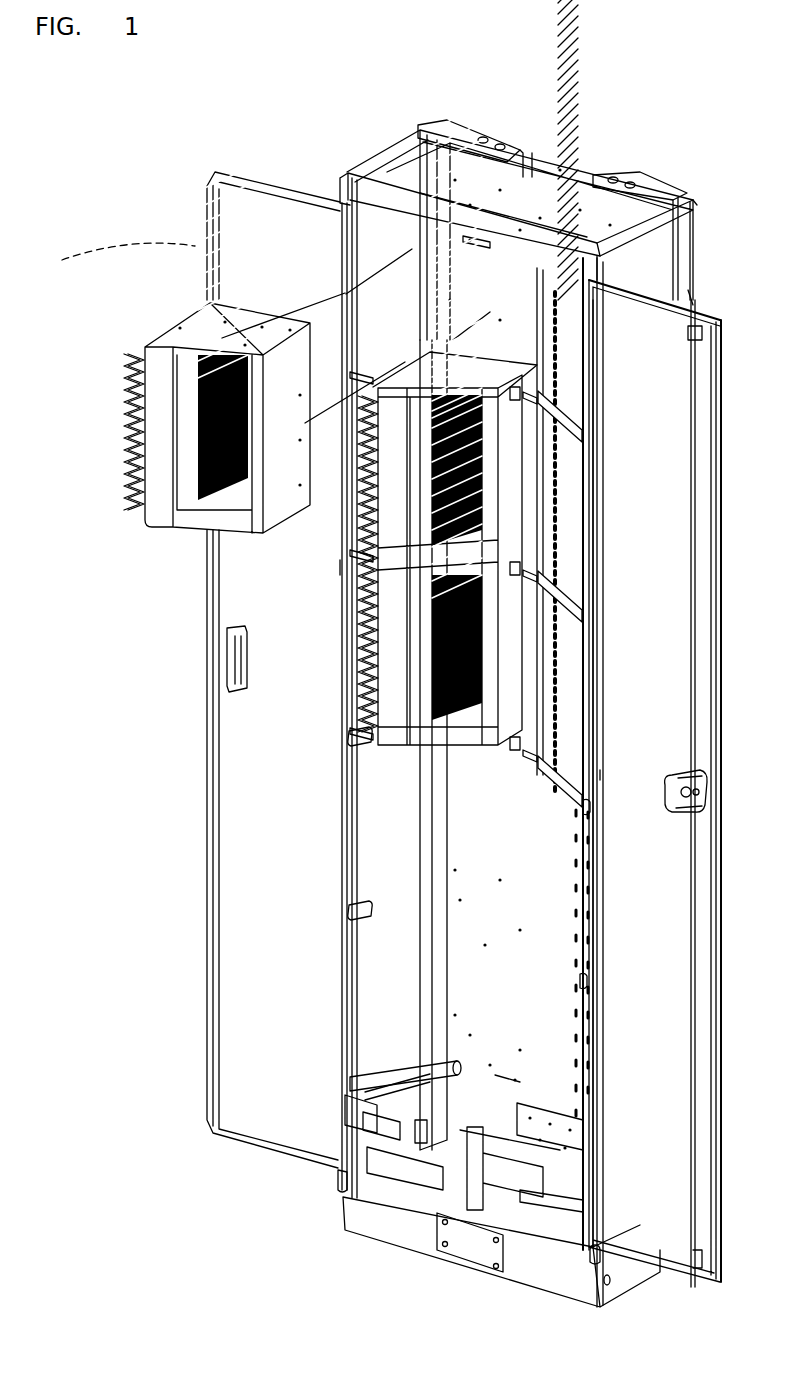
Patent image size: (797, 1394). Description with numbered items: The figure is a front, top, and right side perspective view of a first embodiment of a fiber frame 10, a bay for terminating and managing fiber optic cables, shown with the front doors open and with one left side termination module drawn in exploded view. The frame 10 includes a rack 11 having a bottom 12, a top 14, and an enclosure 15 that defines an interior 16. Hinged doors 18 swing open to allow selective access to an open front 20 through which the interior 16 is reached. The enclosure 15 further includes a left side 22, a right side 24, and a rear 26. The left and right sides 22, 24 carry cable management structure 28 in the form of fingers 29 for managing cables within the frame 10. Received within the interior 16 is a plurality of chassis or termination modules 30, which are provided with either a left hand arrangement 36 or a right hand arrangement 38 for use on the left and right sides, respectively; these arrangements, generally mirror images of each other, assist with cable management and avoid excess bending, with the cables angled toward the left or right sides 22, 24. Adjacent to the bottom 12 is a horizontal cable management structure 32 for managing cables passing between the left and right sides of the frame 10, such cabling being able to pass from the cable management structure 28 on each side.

The frame 10 is at (312, 85).
The rack 11 is at (636, 208).
The bottom 12 is at (360, 1217).
The top 14 is at (543, 156).
The enclosure 15 is at (663, 250).
The interior 16 is at (509, 806).
The hinged doors 18 is at (291, 852).
The open front 20 is at (333, 767).
The left side 22 is at (366, 217).
The right side 24 is at (653, 270).
The rear 26 is at (510, 996).
The cable management structure 28 is at (340, 567).
The fingers 29 is at (360, 902).
The termination modules 30 is at (160, 528).
The horizontal cable management structure 32 is at (523, 1172).
The left hand arrangement 36 is at (212, 321).
The right hand arrangement 38 is at (585, 623).